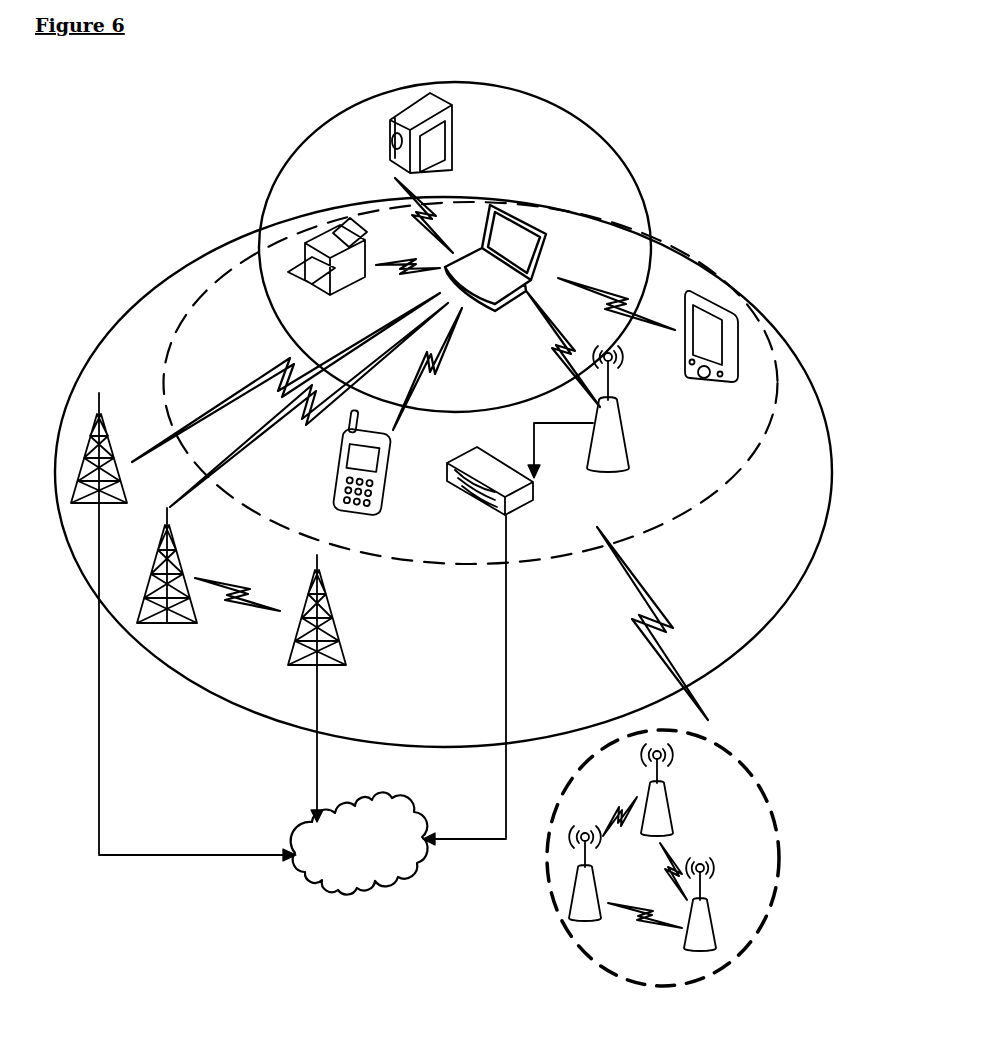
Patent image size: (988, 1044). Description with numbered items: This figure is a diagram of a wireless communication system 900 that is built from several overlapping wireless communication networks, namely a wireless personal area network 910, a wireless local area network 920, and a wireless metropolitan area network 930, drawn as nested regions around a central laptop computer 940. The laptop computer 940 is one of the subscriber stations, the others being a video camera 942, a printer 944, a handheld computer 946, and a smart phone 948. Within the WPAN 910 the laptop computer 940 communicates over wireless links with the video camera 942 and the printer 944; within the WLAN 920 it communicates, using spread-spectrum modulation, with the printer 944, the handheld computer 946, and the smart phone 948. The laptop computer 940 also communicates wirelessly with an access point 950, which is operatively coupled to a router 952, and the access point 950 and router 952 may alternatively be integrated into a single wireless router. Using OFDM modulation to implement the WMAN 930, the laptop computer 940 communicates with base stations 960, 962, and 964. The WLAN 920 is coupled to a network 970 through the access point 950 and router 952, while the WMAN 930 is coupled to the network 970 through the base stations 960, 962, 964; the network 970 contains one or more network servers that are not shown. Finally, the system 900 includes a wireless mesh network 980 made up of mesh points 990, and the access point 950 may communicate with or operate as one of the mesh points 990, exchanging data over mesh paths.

The wireless communication system 900 is at (677, 113).
The wireless personal area network (WPAN) 910 is at (260, 232).
The wireless local area network (WLAN) 920 is at (200, 290).
The wireless metropolitan area network (WMAN) 930 is at (137, 303).
The laptop computer 940 is at (517, 216).
The video camera 942 is at (452, 152).
The printer 944 is at (352, 284).
The handheld computer 946 is at (727, 384).
The smart phone 948 is at (385, 513).
The access point (AP) 950 is at (626, 470).
The router 952 is at (528, 514).
The base station 960 is at (99, 413).
The base station 962 is at (182, 583).
The base station 964 is at (335, 645).
The network 970 is at (410, 810).
The wireless mesh network 980 is at (753, 780).
The mesh points (MPs) 990 is at (698, 836).